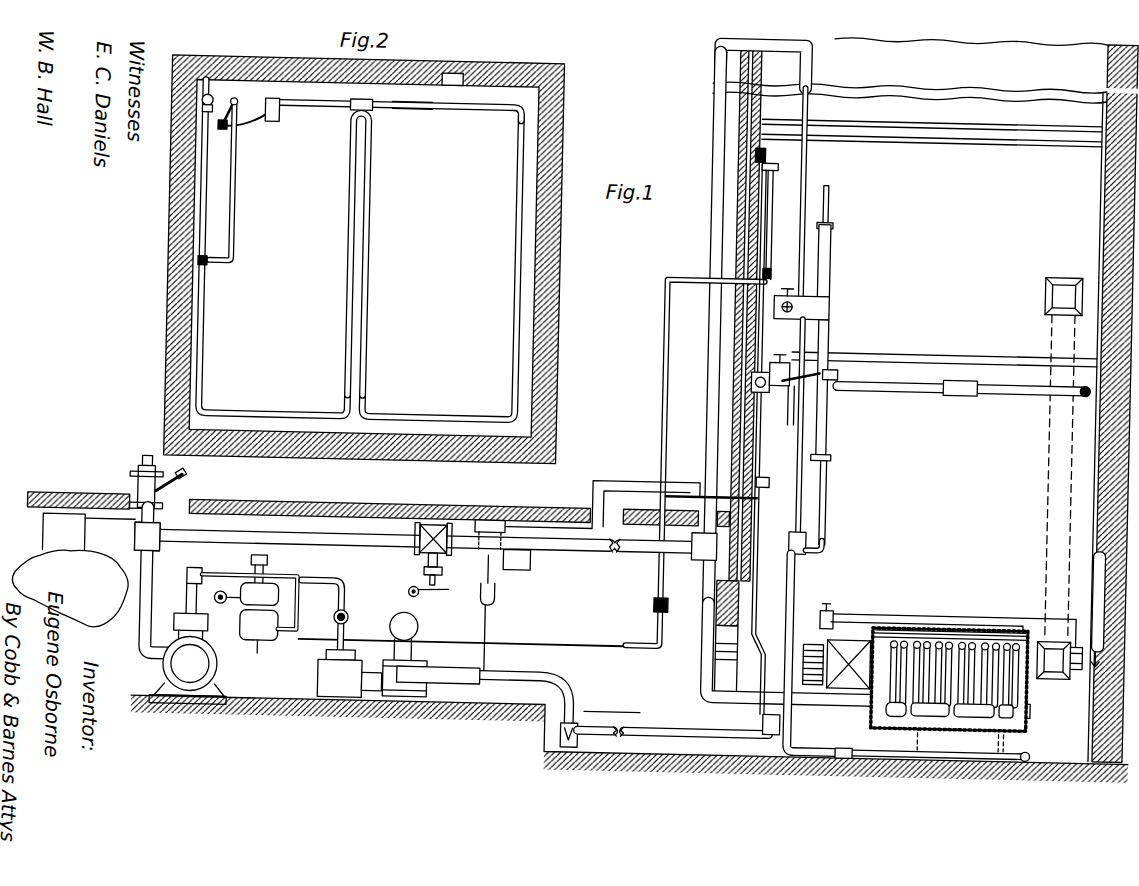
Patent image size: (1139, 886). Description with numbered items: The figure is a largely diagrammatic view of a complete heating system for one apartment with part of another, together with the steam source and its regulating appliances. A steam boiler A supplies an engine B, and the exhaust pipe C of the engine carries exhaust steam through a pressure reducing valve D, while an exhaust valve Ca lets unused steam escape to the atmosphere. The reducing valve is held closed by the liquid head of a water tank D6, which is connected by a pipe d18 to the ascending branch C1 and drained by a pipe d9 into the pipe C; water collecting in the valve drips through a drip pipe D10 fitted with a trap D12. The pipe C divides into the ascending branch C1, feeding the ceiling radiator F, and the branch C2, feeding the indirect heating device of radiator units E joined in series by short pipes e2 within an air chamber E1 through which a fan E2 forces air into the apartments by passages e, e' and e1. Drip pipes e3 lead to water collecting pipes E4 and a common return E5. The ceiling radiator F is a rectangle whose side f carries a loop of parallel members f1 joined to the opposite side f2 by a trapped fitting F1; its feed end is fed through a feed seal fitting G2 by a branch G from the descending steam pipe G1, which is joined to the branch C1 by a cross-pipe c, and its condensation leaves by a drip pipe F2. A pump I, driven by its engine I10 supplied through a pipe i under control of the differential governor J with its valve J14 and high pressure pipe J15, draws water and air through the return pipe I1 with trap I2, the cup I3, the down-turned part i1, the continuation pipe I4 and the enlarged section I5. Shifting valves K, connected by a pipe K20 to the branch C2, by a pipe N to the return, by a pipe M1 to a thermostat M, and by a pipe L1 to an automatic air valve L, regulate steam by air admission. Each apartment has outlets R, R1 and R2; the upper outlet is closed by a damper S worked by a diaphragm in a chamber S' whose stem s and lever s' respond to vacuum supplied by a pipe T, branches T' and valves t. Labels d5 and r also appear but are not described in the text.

In FIG. 1, the steam boiler A is at (73, 569).
In FIG. 1, the engine B is at (200, 672).
In FIG. 1, the exhaust pipe C is at (257, 535).
In FIG. 1, the exhaust valve Ca is at (169, 469).
In FIG. 1, the ascending branch of steam pipe C1 is at (705, 359).
In FIG. 1, the steam supply branch C2 is at (705, 667).
In FIG. 1, the cross-pipe c is at (727, 54).
In FIG. 1, the pressure reducing valve D is at (436, 528).
In FIG. 1, the water tank D6 is at (496, 523).
In FIG. 1, the drain pipe d9 is at (536, 563).
In FIG. 1, the valve hand wheel d5 is at (445, 582).
In FIG. 1, the trap D12 is at (500, 598).
In FIG. 1, the drip pipe D10 is at (504, 639).
In FIG. 1, the tank connecting pipe d18 is at (621, 469).
In FIG. 1, the radiator unit E is at (926, 708).
In FIG. 1, the air chamber E1 is at (905, 622).
In FIG. 1, the fan E2 is at (862, 650).
In FIG. 1, the water collecting pipe E4 is at (992, 750).
In FIG. 1, the common return pipe E5 is at (848, 752).
In FIG. 1, the air flue e is at (1054, 608).
In FIG. 1, the air passage e' is at (1046, 306).
In FIG. 1, the short connecting pipe e2 is at (978, 708).
In FIG. 1, the drip pipe e3 is at (1007, 735).
In FIG. 2, the air passage e1 is at (442, 89).
In FIG. 2, the ceiling radiator F is at (395, 121).
In FIG. 1, the ceiling radiator F is at (954, 388).
In FIG. 2, the trapped fitting F1 is at (343, 118).
In FIG. 1, the drip pipe F2 is at (827, 190).
In FIG. 2, the side of radiator rectangle f is at (386, 424).
In FIG. 2, the loop member f1 is at (343, 283).
In FIG. 2, the opposite side of radiator f2 is at (398, 114).
In FIG. 1, the feed branch G is at (790, 316).
In FIG. 1, the descending steam pipe G1 is at (802, 252).
In FIG. 2, the feed seal fitting G2 is at (203, 104).
In FIG. 1, the feed seal fitting G2 is at (750, 372).
In FIG. 2, the pump I is at (266, 129).
In FIG. 1, the pump I is at (407, 695).
In FIG. 1, the return pipe I1 is at (691, 738).
In FIG. 1, the trap I2 is at (777, 731).
In FIG. 1, the cup-shaped receptacle I3 is at (578, 751).
In FIG. 1, the continuation pipe I4 is at (553, 694).
In FIG. 1, the enlarged pipe section I5 is at (472, 696).
In FIG. 1, the pump engine I10 is at (347, 689).
In FIG. 1, the steam pipe i is at (324, 601).
In FIG. 1, the downwardly turned part i1 is at (610, 696).
In FIG. 1, the differential governor J is at (249, 604).
In FIG. 1, the valve J14 is at (461, 630).
In FIG. 1, the high pressure connecting pipe J15 is at (354, 555).
In FIG. 1, the shifting valve K is at (788, 365).
In FIG. 1, the pipe K20 is at (830, 604).
In FIG. 1, the automatic air valve L is at (833, 367).
In FIG. 2, the air valve pipe L1 is at (233, 132).
In FIG. 1, the air valve pipe L1 is at (809, 400).
In FIG. 2, the thermostat M is at (204, 273).
In FIG. 1, the thermostat M is at (809, 540).
In FIG. 2, the thermostat pipe M1 is at (231, 217).
In FIG. 1, the thermostat pipe M1 is at (803, 464).
In FIG. 1, the return connecting pipe N is at (799, 514).
In FIG. 1, the lower air outlet opening R is at (752, 565).
In FIG. 1, the upper air outlet opening R1 is at (751, 379).
In FIG. 1, the intermediate air outlet opening R2 is at (752, 458).
In FIG. 1, the small pipe r is at (769, 439).
In FIG. 1, the damper S is at (720, 401).
In FIG. 1, the diaphragm chamber S' is at (716, 420).
In FIG. 1, the diaphragm stem s is at (772, 150).
In FIG. 1, the lever s' is at (803, 164).
In FIG. 1, the vacuum pipe T is at (689, 464).
In FIG. 1, the branch pipe T' is at (778, 312).
In FIG. 1, the valve t is at (765, 275).